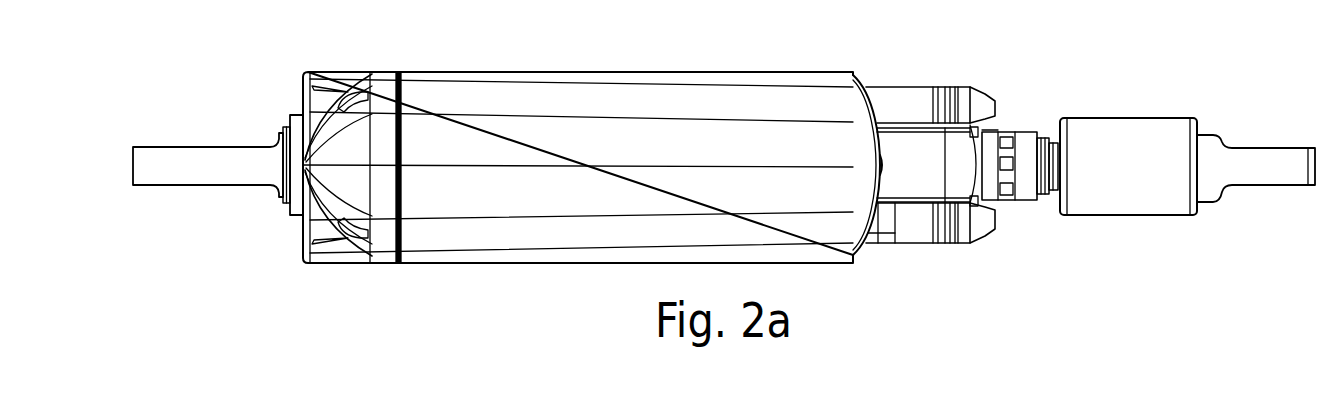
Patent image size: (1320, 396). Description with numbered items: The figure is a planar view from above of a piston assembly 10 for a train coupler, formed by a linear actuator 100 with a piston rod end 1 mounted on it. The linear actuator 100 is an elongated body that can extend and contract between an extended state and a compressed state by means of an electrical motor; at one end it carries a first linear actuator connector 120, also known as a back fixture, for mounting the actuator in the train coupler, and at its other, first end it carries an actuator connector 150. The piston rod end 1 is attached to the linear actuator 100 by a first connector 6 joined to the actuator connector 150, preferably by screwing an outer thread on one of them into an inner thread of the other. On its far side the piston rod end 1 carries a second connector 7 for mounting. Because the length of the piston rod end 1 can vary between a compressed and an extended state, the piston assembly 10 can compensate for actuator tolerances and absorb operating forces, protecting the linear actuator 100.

The piston rod end 1 is at (1187, 146).
The first connector 6 is at (1040, 200).
The second connector 7 is at (1275, 172).
The piston assembly 10 is at (998, 246).
The linear actuator 100 is at (624, 63).
The first linear actuator connector 120 is at (228, 173).
The actuator connector 150 is at (1022, 143).